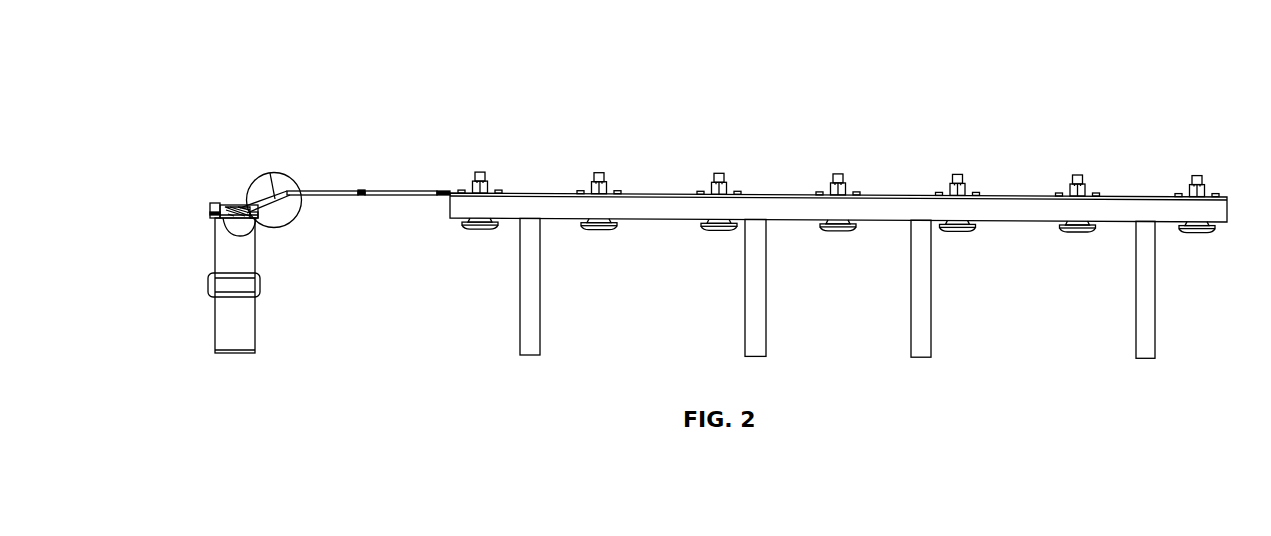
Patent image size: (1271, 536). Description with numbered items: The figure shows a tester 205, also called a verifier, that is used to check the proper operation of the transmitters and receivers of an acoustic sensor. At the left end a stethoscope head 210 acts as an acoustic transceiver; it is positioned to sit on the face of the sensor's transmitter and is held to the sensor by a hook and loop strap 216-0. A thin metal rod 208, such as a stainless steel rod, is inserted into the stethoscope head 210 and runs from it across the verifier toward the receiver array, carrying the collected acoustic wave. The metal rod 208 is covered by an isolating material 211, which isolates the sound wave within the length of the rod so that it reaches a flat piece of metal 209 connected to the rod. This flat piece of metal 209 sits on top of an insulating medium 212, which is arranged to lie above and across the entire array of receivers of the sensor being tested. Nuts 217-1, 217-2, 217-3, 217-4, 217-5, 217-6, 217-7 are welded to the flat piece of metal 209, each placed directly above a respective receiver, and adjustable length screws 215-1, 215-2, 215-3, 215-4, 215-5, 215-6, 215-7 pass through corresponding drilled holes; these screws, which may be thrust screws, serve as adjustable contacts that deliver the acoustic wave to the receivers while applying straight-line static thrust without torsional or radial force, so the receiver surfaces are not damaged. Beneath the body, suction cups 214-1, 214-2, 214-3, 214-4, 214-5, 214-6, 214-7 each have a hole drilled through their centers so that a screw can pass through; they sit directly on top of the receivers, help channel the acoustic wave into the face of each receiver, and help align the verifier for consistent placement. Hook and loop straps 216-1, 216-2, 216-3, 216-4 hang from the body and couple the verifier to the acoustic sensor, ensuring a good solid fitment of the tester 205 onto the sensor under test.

The tester 205 is at (384, 36).
The metal rod 208 is at (360, 191).
The flat piece of metal 209 is at (553, 193).
The stethoscope head 210 is at (232, 206).
The isolating material 211 is at (313, 189).
The insulating medium 212 is at (457, 207).
The suction cup 214-1 is at (482, 229).
The suction cup 214-2 is at (601, 230).
The suction cup 214-3 is at (721, 230).
The suction cup 214-4 is at (840, 231).
The suction cup 214-5 is at (958, 232).
The suction cup 214-6 is at (1078, 232).
The suction cup 214-7 is at (1197, 233).
The adjustable length screw 215-1 is at (478, 172).
The adjustable length screw 215-2 is at (601, 173).
The adjustable length screw 215-3 is at (721, 173).
The adjustable length screw 215-4 is at (840, 174).
The adjustable length screw 215-5 is at (960, 174).
The adjustable length screw 215-6 is at (1080, 175).
The adjustable length screw 215-7 is at (1199, 176).
The hook and loop strap 216-0 is at (245, 325).
The hook and loop strap 216-1 is at (537, 327).
The hook and loop strap 216-2 is at (762, 327).
The hook and loop strap 216-3 is at (928, 328).
The hook and loop strap 216-4 is at (1152, 329).
The nut 217-1 is at (472, 192).
The nut 217-2 is at (591, 192).
The nut 217-3 is at (712, 194).
The nut 217-4 is at (831, 194).
The nut 217-5 is at (950, 194).
The nut 217-6 is at (1070, 195).
The nut 217-7 is at (1190, 196).